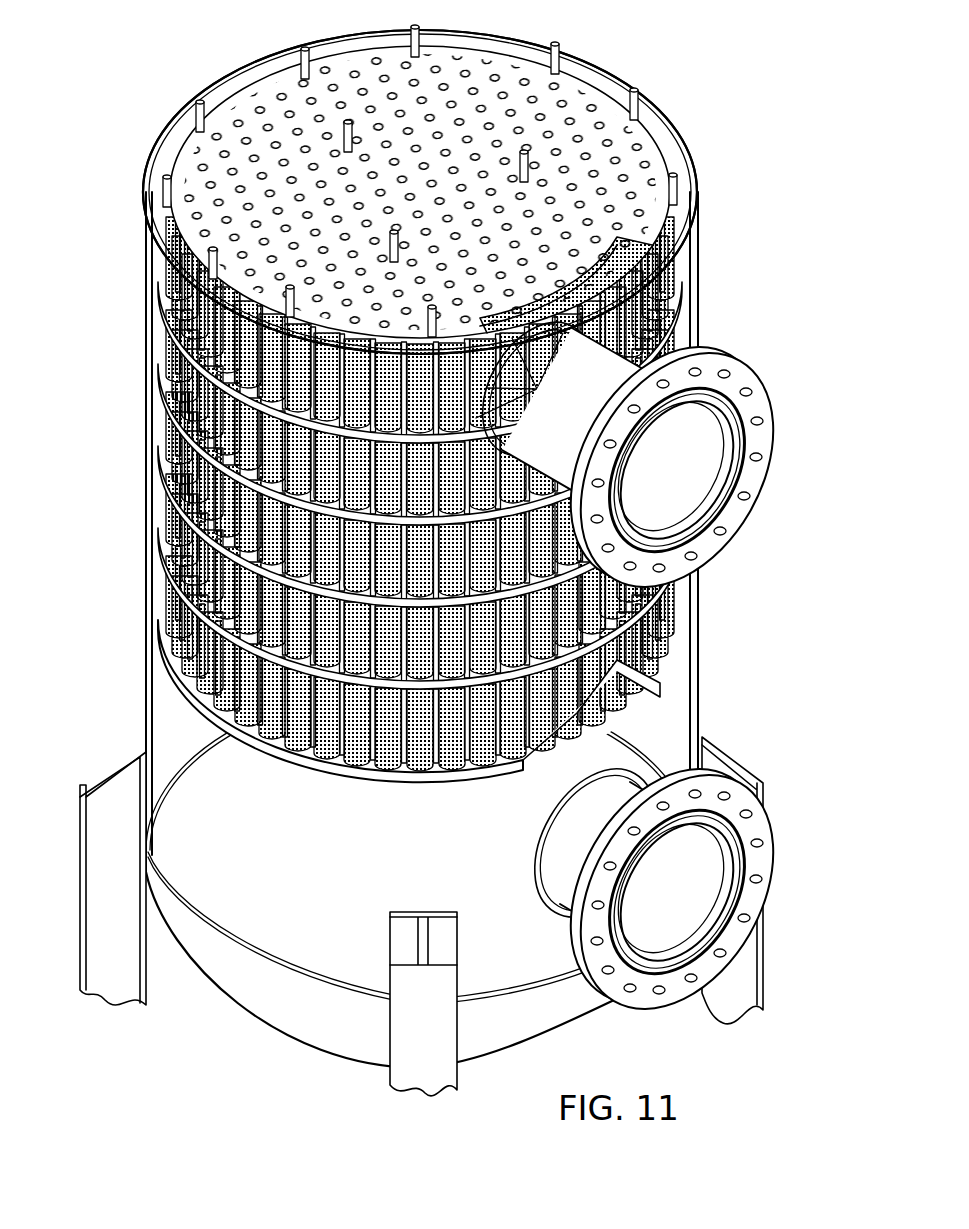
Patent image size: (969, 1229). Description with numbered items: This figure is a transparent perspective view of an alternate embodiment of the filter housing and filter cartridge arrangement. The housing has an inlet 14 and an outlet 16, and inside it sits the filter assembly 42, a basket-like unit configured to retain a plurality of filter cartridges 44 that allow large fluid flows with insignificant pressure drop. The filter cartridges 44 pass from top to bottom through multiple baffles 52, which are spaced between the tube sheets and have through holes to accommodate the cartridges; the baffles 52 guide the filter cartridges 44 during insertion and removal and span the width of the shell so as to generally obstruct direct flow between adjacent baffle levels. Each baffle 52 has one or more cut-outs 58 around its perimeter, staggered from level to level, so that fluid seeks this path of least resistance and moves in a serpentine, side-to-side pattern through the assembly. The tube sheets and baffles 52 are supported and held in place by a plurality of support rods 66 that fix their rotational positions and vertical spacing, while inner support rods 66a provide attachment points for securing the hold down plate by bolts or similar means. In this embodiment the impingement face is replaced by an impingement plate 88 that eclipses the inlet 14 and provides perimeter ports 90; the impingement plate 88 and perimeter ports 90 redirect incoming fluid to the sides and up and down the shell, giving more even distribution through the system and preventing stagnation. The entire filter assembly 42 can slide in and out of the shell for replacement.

The inlet 14 is at (757, 393).
The outlet 16 is at (757, 815).
The filter assembly 42 is at (94, 487).
The filter cartridges 44 is at (167, 304).
The baffles 52 is at (167, 560).
The cut-outs 58 is at (226, 558).
The support rods 66 is at (212, 112).
The inner support rods 66a is at (348, 118).
The impingement plate 88 is at (580, 355).
The perimeter ports 90 is at (540, 440).